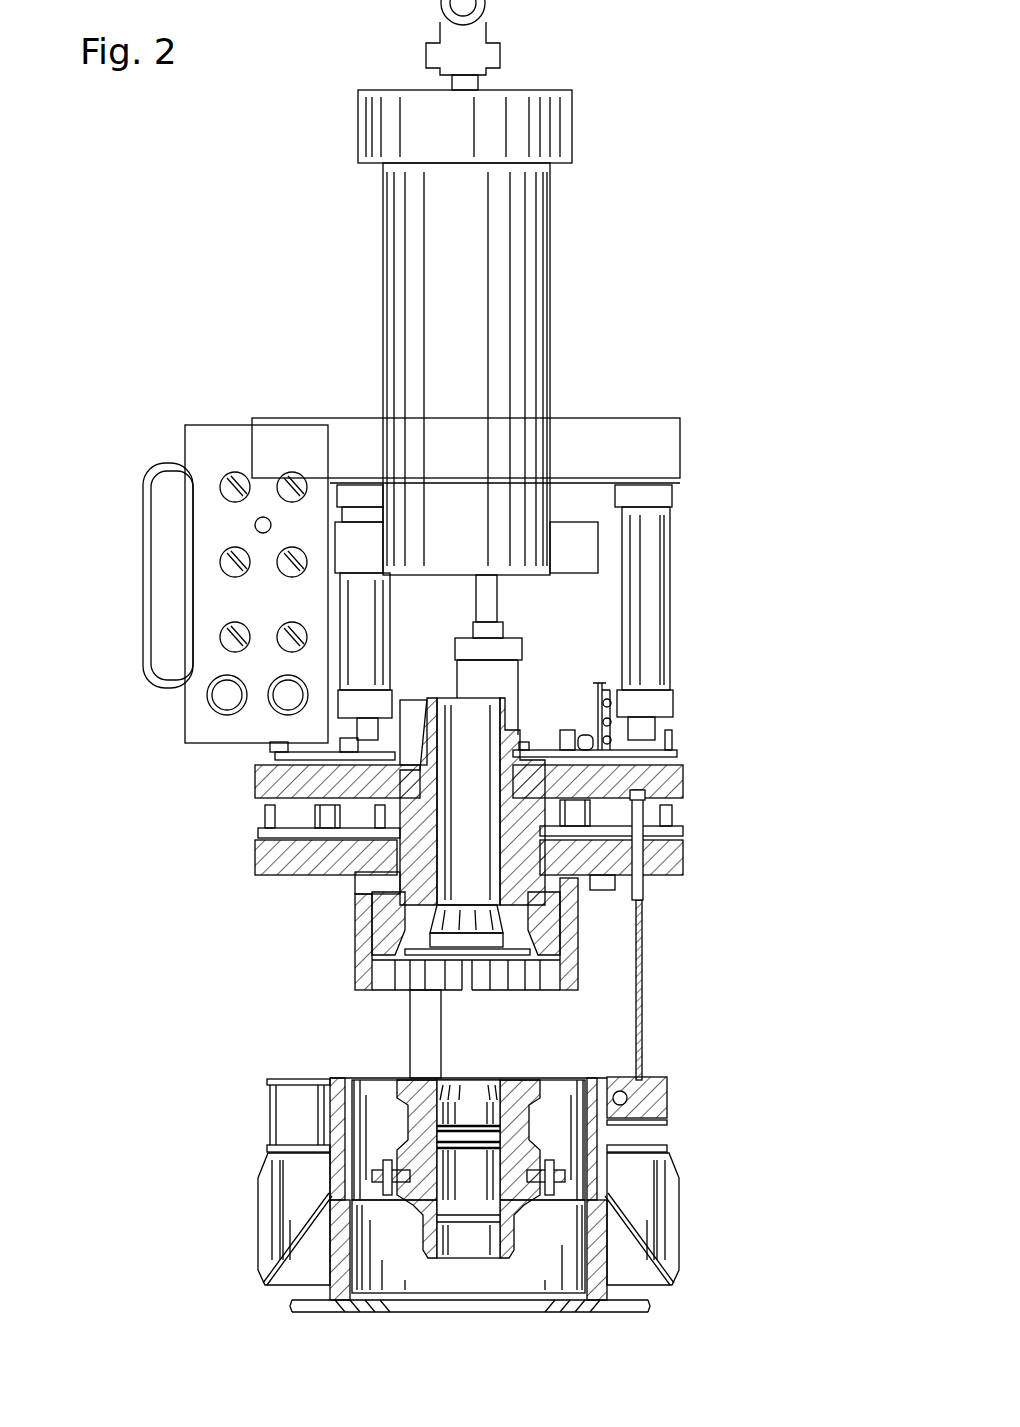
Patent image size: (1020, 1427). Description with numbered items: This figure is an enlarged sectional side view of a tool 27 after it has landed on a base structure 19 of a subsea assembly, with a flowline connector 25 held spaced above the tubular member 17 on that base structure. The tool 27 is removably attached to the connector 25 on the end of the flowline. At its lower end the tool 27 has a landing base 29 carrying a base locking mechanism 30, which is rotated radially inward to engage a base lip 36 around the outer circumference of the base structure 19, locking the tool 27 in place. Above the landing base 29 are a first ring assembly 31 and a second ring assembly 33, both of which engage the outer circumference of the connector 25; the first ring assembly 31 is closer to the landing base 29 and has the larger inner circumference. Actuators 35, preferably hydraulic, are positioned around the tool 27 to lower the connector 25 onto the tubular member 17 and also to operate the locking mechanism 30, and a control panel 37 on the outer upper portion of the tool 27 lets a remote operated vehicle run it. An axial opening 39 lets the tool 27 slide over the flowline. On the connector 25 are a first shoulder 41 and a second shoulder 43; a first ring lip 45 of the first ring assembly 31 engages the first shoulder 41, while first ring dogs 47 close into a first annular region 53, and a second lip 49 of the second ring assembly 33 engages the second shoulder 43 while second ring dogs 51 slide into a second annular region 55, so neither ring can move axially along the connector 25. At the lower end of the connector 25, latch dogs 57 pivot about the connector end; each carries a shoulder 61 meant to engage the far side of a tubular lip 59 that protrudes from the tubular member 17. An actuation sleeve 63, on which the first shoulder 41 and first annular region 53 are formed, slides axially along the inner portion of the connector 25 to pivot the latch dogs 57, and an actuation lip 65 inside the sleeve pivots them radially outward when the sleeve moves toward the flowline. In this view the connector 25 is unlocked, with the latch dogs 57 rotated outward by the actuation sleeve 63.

The tubular member 17 is at (405, 1213).
The base structure 19 is at (345, 1168).
The connector 25 is at (513, 745).
The tool 27 is at (597, 287).
The landing base 29 is at (672, 1243).
The base locking mechanism 30 is at (640, 1146).
The first ring assembly 31 is at (678, 860).
The second ring assembly 33 is at (672, 785).
The actuators 35 is at (650, 528).
The base lip 36 is at (662, 1098).
The control panel 37 is at (190, 445).
The opening 39 is at (400, 955).
The first shoulder 41 is at (310, 845).
The second shoulder 43 is at (290, 766).
The first ring lip 45 is at (645, 825).
The first ring dogs 47 is at (600, 880).
The second lip 49 is at (610, 732).
The second ring dogs 51 is at (620, 785).
The first annular region 53 is at (352, 892).
The second annular region 55 is at (320, 812).
The latch dogs 57 is at (340, 745).
The tubular lip 59 is at (400, 1107).
The shoulder 61 is at (357, 992).
The actuation sleeve 63 is at (372, 922).
The actuation lip 65 is at (358, 926).